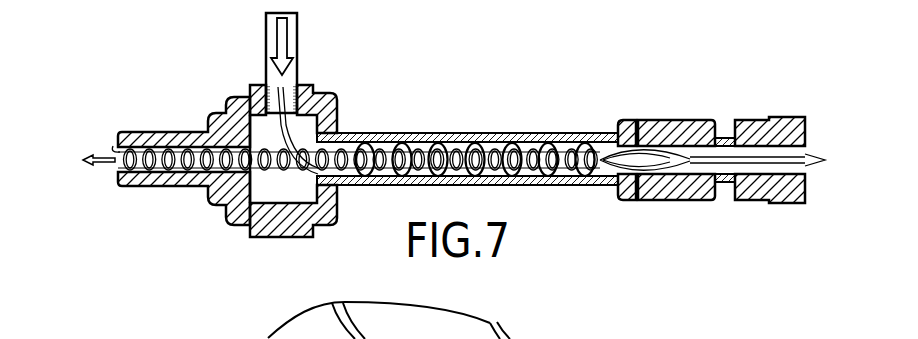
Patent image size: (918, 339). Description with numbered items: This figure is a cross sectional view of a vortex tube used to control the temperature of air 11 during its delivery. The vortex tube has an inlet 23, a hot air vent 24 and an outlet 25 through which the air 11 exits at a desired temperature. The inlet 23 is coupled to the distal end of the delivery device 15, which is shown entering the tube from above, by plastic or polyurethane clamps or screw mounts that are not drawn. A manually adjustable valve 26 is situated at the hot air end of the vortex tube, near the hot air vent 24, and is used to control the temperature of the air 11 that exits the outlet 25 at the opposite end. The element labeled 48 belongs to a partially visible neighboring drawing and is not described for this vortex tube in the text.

The delivery device 15 is at (298, 60).
The inlet 23 is at (306, 84).
The outlet 25 is at (92, 145).
The air 11 is at (105, 170).
The hot air vent 24 is at (806, 148).
The manually adjustable valve 26 is at (785, 204).
The band 48 is at (492, 325).